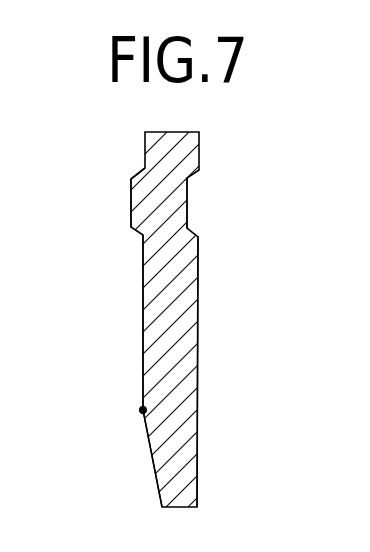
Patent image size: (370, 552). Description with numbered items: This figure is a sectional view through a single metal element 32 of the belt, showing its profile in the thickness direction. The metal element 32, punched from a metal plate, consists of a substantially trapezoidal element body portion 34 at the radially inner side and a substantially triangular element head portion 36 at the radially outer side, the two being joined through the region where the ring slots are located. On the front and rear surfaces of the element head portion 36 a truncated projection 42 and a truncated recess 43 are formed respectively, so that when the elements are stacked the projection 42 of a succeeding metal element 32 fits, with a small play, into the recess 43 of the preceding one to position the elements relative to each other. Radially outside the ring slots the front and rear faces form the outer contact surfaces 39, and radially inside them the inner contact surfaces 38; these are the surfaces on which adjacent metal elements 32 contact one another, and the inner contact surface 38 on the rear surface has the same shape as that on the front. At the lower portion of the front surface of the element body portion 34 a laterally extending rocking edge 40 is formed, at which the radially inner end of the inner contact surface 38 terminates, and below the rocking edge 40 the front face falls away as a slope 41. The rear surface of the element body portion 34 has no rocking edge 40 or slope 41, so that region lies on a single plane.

The metal element 32 is at (200, 146).
The element body portion 34 is at (200, 425).
The element head portion 36 is at (136, 172).
The inner contact surface 38 is at (143, 370).
The outer contact surface 39 is at (143, 268).
The rocking edge 40 is at (142, 413).
The slope 41 is at (150, 460).
The projection 42 is at (132, 200).
The recess 43 is at (187, 201).